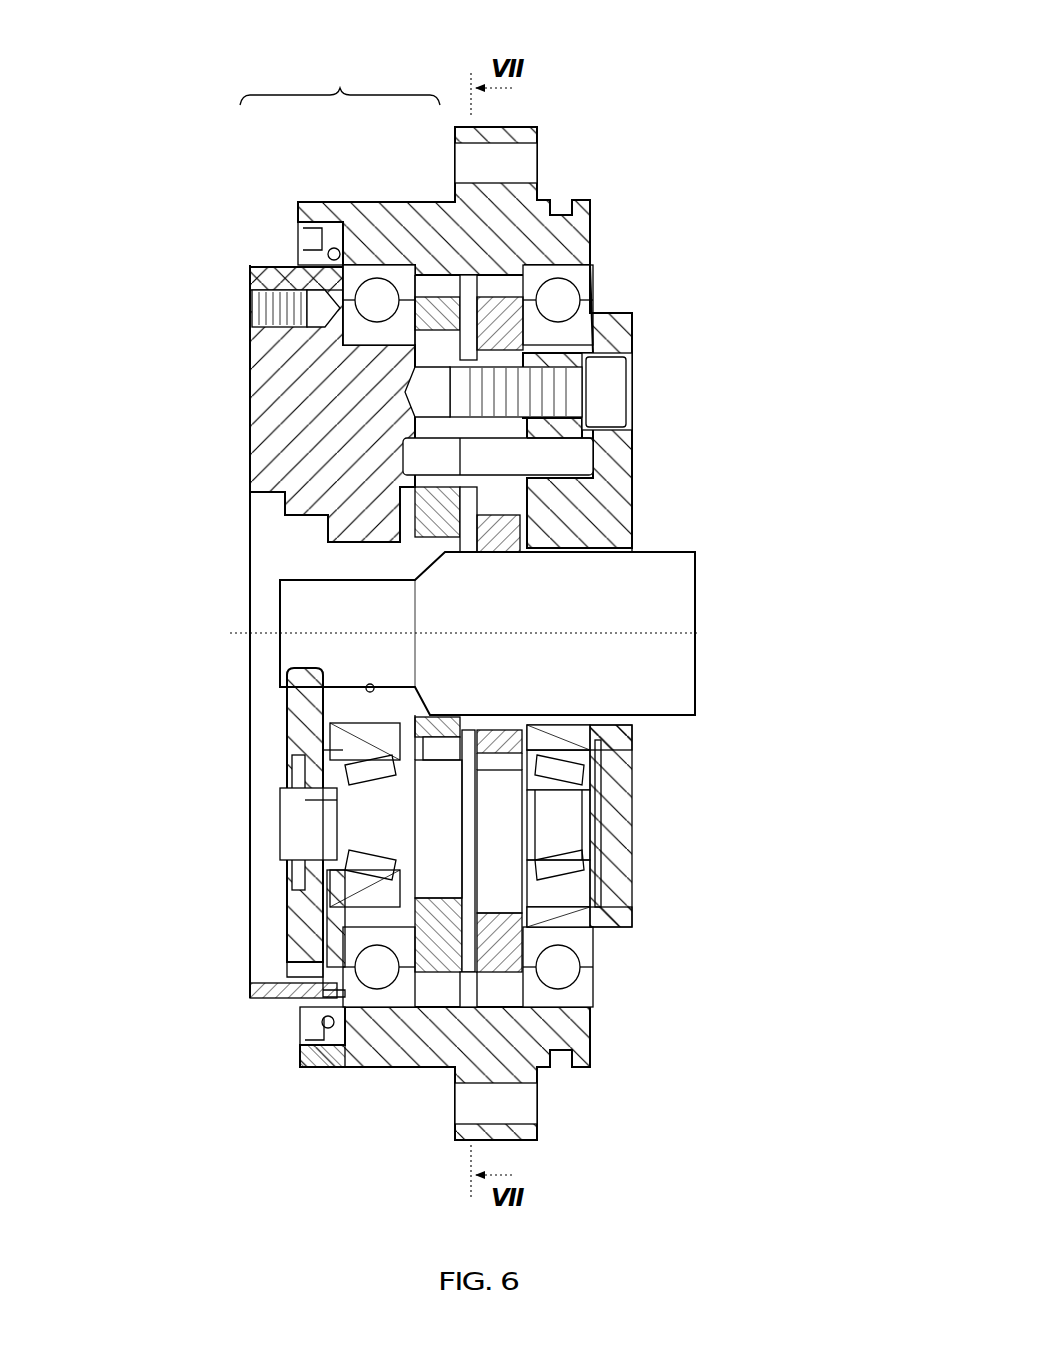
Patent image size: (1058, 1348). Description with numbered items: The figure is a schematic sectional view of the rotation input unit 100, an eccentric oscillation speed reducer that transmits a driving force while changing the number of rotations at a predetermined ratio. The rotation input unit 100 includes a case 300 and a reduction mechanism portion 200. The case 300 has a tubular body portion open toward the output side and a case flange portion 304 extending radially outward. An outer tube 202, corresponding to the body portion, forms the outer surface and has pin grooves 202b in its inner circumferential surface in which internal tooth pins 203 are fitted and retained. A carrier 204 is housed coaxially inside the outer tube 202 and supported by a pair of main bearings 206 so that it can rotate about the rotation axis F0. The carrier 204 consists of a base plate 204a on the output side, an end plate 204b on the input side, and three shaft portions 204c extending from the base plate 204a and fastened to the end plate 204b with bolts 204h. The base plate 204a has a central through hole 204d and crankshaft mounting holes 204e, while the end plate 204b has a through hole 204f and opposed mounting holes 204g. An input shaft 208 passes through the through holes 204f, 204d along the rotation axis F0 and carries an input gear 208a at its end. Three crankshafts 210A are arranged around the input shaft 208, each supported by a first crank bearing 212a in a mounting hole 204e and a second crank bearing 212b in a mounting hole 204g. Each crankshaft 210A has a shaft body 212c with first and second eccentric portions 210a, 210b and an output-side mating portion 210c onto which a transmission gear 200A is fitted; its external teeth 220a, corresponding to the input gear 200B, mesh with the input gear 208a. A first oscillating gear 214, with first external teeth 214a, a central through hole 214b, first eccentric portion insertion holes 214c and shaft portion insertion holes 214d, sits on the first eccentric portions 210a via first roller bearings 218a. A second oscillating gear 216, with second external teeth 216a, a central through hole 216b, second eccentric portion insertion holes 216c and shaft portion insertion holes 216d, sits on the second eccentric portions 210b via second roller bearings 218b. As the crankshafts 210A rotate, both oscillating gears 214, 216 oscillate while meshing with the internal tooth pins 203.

The rotation input unit 100 is at (685, 105).
The reduction mechanism portion 200 is at (718, 430).
The transmission gear 200A is at (300, 700).
The input gear 200B is at (305, 826).
The outer tube 202 is at (365, 1075).
The pin groove 202b is at (560, 1045).
The internal tooth pin 203 is at (505, 270).
The carrier 204 is at (340, 81).
The base plate 204a is at (250, 400).
The end plate 204b is at (430, 285).
The shaft portion 204c is at (350, 300).
The through hole 204d is at (330, 540).
The crankshaft mounting hole 204e is at (300, 760).
The through hole 204f is at (635, 555).
The crankshaft mounting hole 204g is at (622, 765).
The bolt 204h is at (637, 398).
The main bearing 206 is at (595, 292).
The input shaft 208 is at (672, 655).
The input gear 208a is at (370, 686).
The crankshaft 210A is at (275, 828).
The first eccentric portion 210a is at (305, 800).
The second eccentric portion 210b is at (530, 830).
The mating portion 210c is at (310, 840).
The first crank bearing 212a is at (340, 880).
The second crank bearing 212b is at (605, 868).
The shaft body 212c is at (575, 800).
The first oscillating gear 214 is at (405, 505).
The first external teeth 214a is at (445, 320).
The central through hole 214b is at (410, 548).
The first eccentric portion insertion hole 214c is at (335, 955).
The shaft portion insertion hole 214d is at (410, 458).
The second oscillating gear 216 is at (505, 525).
The second external teeth 216a is at (585, 270).
The central through hole 216b is at (530, 730).
The second eccentric portion insertion hole 216c is at (592, 905).
The shaft portion insertion hole 216d is at (560, 478).
The first roller bearing 218a is at (440, 745).
The second roller bearing 218b is at (492, 738).
The external teeth 220a is at (290, 670).
The case 300 is at (452, 82).
The case flange portion 304 is at (537, 135).
The rotation axis F0 is at (242, 634).